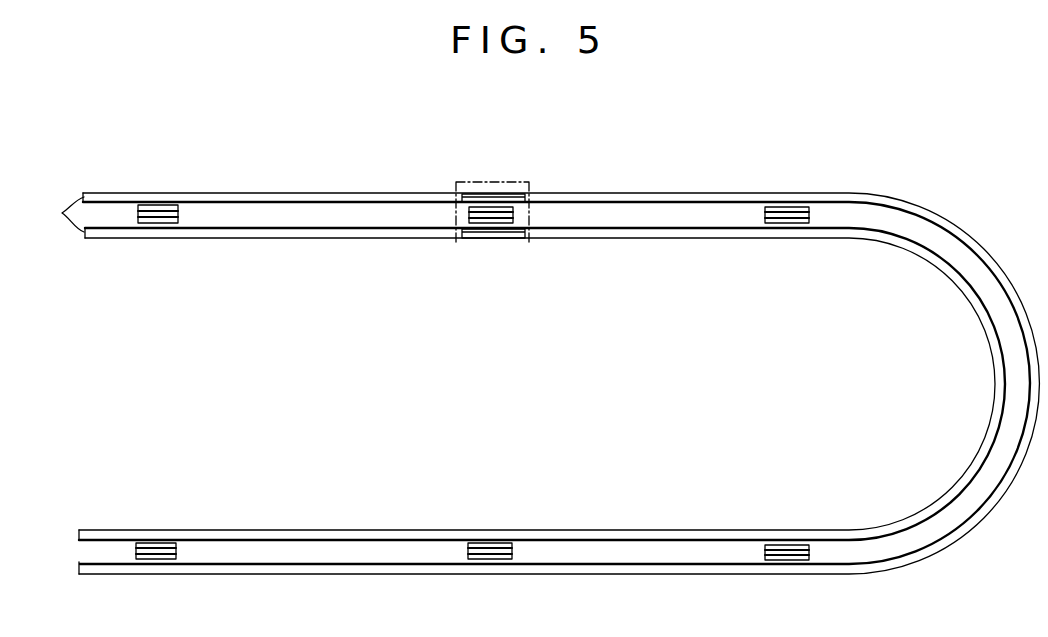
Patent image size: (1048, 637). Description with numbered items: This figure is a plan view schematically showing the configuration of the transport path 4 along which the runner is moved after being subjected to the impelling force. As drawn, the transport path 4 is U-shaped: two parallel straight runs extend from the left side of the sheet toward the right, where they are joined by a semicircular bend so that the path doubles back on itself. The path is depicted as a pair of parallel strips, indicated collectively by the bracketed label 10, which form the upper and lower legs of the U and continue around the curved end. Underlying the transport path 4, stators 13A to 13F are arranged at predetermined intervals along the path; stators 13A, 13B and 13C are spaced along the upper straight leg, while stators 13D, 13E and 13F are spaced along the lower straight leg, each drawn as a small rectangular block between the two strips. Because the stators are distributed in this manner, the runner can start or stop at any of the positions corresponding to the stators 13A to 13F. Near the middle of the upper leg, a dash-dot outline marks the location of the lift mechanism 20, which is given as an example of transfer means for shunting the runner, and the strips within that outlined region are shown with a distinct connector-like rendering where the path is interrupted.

The transport path 4 is at (904, 198).
The pair of guide rails 10 is at (60, 214).
The lift mechanism 20 is at (507, 180).
The stator 13A is at (163, 205).
The stator 13B is at (488, 223).
The stator 13C is at (787, 207).
The stator 13D is at (793, 560).
The stator 13E is at (491, 559).
The stator 13F is at (157, 559).